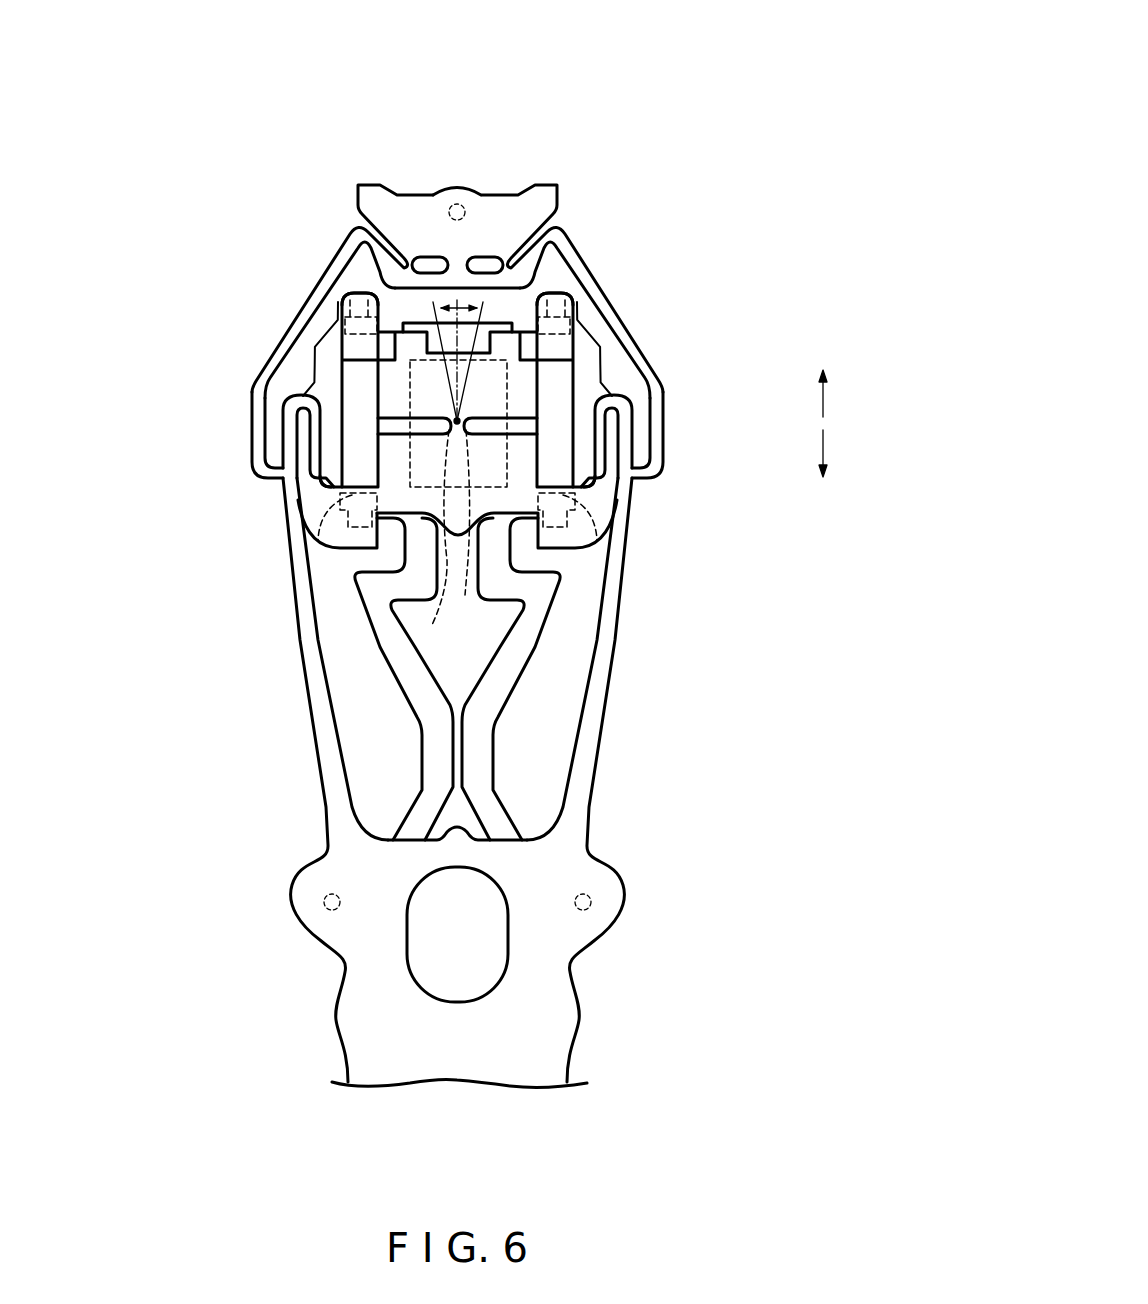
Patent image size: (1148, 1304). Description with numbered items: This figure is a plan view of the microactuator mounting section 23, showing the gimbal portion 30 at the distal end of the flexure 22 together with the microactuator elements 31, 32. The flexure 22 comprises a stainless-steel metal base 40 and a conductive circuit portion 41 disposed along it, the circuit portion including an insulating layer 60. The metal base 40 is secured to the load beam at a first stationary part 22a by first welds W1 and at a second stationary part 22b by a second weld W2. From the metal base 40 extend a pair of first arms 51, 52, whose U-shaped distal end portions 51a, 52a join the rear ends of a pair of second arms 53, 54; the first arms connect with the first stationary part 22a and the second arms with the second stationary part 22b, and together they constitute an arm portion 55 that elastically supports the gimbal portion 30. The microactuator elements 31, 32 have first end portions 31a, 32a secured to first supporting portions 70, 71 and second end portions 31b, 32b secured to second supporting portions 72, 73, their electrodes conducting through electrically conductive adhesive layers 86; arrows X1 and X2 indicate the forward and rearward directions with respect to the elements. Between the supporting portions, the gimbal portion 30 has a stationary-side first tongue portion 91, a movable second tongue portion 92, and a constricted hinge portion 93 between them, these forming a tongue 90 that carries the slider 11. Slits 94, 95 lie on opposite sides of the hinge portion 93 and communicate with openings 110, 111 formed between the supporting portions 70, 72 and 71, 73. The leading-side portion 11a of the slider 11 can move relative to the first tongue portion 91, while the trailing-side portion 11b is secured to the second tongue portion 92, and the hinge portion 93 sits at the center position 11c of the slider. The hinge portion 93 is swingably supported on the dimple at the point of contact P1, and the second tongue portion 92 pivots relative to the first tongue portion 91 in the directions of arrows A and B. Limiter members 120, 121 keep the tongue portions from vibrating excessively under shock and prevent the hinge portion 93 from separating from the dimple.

The microactuator mounting section 23 is at (598, 118).
The flexure 22 is at (604, 792).
The first stationary part 22a is at (553, 870).
The second stationary part 22b is at (417, 210).
The first weld W1 is at (324, 902).
The second weld W2 is at (462, 204).
The slider 11 is at (345, 405).
The leading-side portion 11a is at (469, 525).
The trailing-side portion 11b is at (600, 345).
The center position 11c is at (437, 538).
The gimbal portion 30 is at (340, 575).
The microactuator element 31 is at (565, 375).
The first end portion 31a is at (575, 527).
The second end portion 31b is at (577, 320).
The microactuator element 32 is at (352, 368).
The first end portion 32a is at (343, 525).
The second end portion 32b is at (340, 318).
The metal base 40 is at (452, 1083).
The conductive circuit portion 41 is at (494, 735).
The first arm 51 is at (598, 664).
The distal end portion 51a is at (625, 398).
The first arm 52 is at (310, 688).
The distal end portion 52a is at (300, 400).
The second arm 53 is at (628, 322).
The second arm 54 is at (302, 305).
The arm portion 55 is at (245, 463).
The insulating layer 60 is at (503, 672).
The first supporting portion 70 is at (565, 500).
The first supporting portion 71 is at (345, 502).
The second supporting portion 72 is at (580, 292).
The second supporting portion 73 is at (352, 296).
The electrically conductive adhesive layer 86 is at (345, 287).
The tongue 90 is at (506, 524).
The first tongue portion 91 is at (574, 495).
The second tongue portion 92 is at (505, 418).
The hinge portion 93 is at (597, 455).
The slit 94 is at (510, 432).
The slit 95 is at (330, 438).
The opening 110 is at (590, 465).
The opening 111 is at (326, 465).
The limiter member 120 is at (602, 302).
The limiter member 121 is at (312, 272).
The point of contact P1 is at (452, 432).
The arrow A is at (473, 310).
The arrow B is at (431, 310).
The arrow X1 is at (823, 395).
The arrow X2 is at (823, 440).